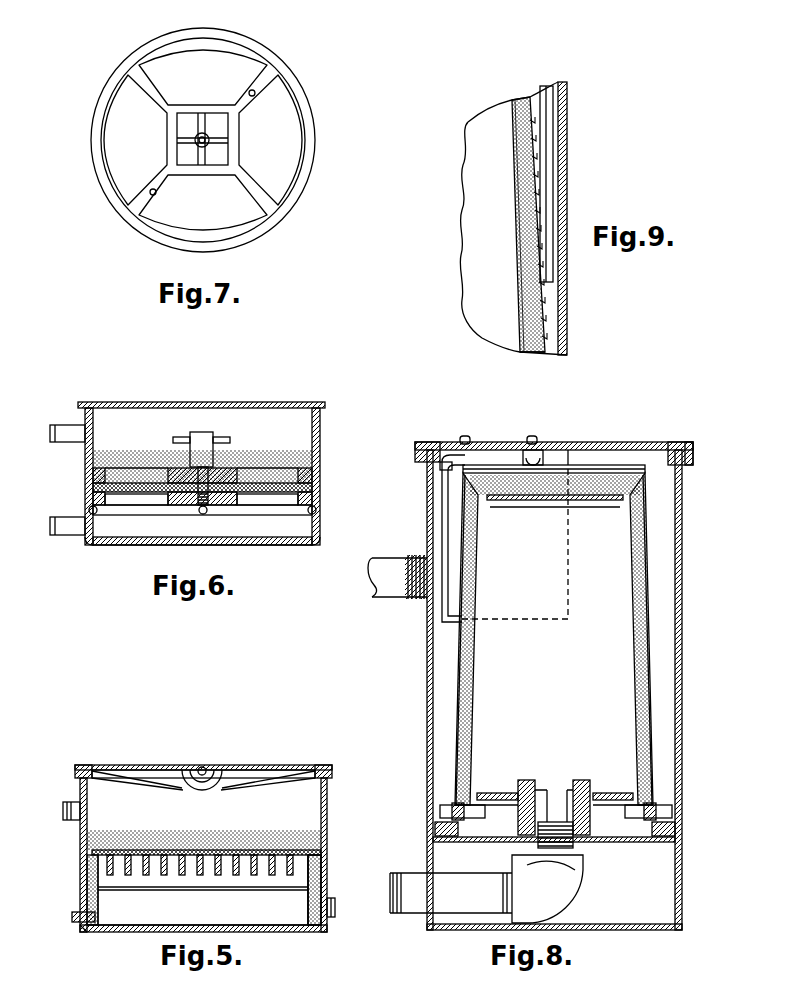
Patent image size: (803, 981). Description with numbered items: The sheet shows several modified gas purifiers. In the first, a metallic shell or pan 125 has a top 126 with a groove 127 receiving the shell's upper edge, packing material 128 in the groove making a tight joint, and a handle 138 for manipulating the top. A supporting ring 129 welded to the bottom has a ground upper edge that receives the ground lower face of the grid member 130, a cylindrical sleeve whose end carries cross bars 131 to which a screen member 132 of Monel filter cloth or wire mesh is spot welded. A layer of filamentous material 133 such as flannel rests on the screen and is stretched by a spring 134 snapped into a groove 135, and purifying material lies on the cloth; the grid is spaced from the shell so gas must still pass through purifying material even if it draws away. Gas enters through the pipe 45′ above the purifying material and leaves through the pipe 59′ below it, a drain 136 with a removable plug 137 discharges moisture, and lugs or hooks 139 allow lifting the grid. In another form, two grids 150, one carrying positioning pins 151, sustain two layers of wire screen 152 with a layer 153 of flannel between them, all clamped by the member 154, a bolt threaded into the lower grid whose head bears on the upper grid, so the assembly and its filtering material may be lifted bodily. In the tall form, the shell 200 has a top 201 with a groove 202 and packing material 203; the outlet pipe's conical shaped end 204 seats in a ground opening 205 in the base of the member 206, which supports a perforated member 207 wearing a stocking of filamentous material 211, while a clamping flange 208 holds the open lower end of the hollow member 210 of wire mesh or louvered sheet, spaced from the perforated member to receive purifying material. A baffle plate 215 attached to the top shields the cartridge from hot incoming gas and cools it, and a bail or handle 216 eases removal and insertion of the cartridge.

In FIG. 7, the grids 150 is at (305, 113).
In FIG. 6, the grids 150 is at (93, 470).
In FIG. 7, the pins 151 is at (157, 194).
In FIG. 6, the wire screen 152 is at (318, 491).
In FIG. 6, the layer of filamentous material 153 is at (93, 486).
In FIG. 6, the member 154 is at (201, 452).
In FIG. 5, the shell or pan 125 is at (327, 817).
In FIG. 5, the top 126 is at (276, 768).
In FIG. 5, the groove 127 is at (326, 777).
In FIG. 5, the packing material 128 is at (328, 782).
In FIG. 5, the supporting ring 129 is at (88, 900).
In FIG. 5, the grid member 130 is at (88, 882).
In FIG. 5, the cross bars 131 is at (183, 876).
In FIG. 5, the screen member 132 is at (262, 862).
In FIG. 5, the layer of filamentous material 133 is at (90, 840).
In FIG. 5, the spring 134 is at (92, 855).
In FIG. 5, the groove 135 is at (88, 862).
In FIG. 5, the drain 136 is at (82, 930).
In FIG. 5, the removable plug 137 is at (74, 918).
In FIG. 5, the handle 138 is at (206, 765).
In FIG. 5, the lugs or hooks 139 is at (322, 878).
In FIG. 5, the pipe 45′ is at (72, 800).
In FIG. 8, the pipe 45′ is at (392, 588).
In FIG. 5, the pipe 59′ is at (331, 906).
In FIG. 8, the pipe 59′ is at (422, 907).
In FIG. 8, the shell 200 is at (684, 673).
In FIG. 8, the top 201 is at (648, 441).
In FIG. 8, the groove 202 is at (692, 462).
In FIG. 8, the packing material 203 is at (691, 450).
In FIG. 8, the conical shaped end 204 is at (586, 832).
In FIG. 8, the opening 205 is at (590, 793).
In FIG. 8, the member 206 is at (495, 793).
In FIG. 8, the member 207 is at (635, 676).
In FIG. 8, the clamping flange 208 is at (684, 826).
In FIG. 8, the hollow member 210 is at (652, 630).
In FIG. 8, the layer or stocking of filamentous material 211 is at (650, 720).
In FIG. 8, the baffle plate 215 is at (443, 517).
In FIG. 8, the bail or handle 216 is at (581, 468).